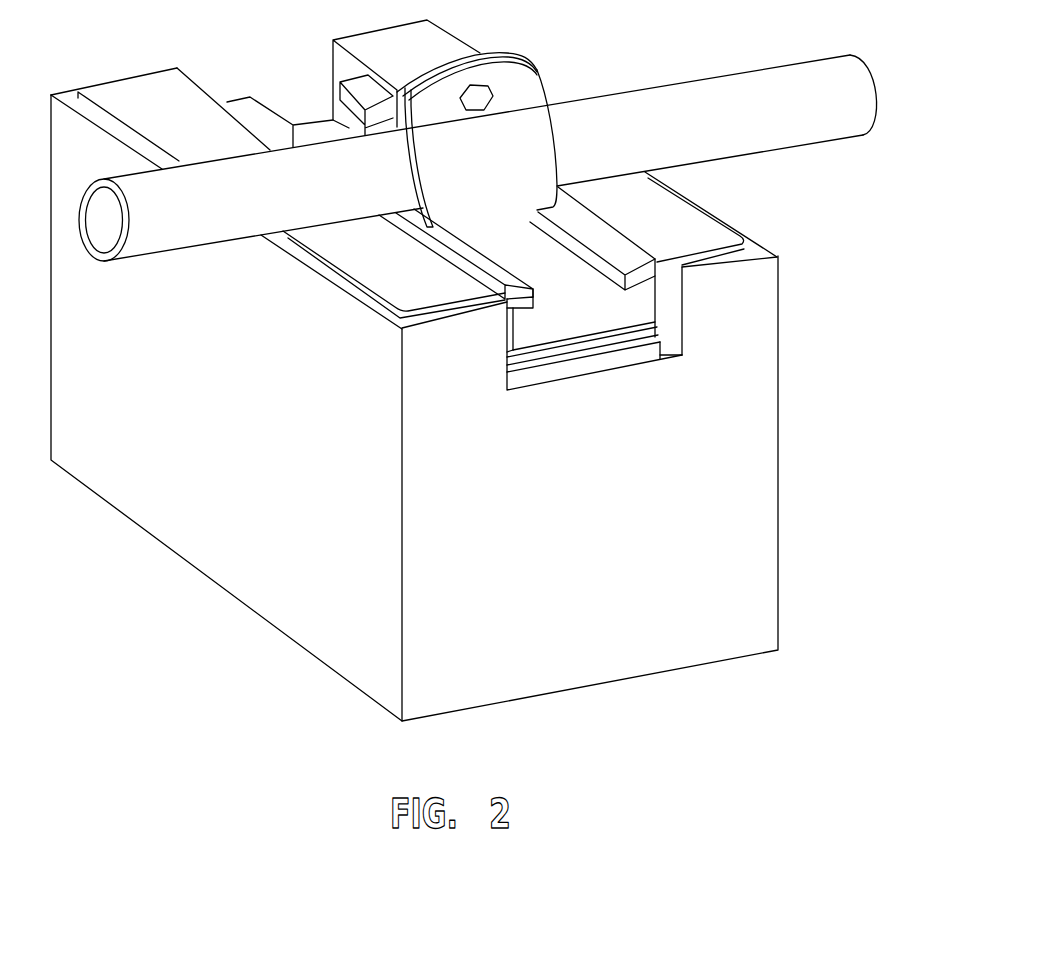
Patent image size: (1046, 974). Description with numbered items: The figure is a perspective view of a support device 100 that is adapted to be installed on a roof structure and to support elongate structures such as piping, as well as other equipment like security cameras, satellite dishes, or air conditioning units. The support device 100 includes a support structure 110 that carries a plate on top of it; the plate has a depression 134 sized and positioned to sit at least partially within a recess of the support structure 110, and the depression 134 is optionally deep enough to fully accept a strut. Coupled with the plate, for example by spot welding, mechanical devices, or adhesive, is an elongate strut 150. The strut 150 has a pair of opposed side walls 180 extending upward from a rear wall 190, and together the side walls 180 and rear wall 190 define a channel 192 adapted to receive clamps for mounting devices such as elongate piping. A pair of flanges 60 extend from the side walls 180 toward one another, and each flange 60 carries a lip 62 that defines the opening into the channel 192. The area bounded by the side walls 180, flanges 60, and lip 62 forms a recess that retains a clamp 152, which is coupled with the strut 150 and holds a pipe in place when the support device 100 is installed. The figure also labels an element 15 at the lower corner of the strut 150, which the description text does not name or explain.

The support device 100 is at (464, 370).
The support structure 110 is at (779, 448).
The depression 134 is at (318, 128).
The clamp 152 is at (533, 88).
The flanges 60 is at (463, 262).
The lip 62 is at (540, 227).
The elongate strut 150 is at (522, 355).
The side walls 180 is at (514, 330).
The rear wall 190 is at (557, 340).
The channel 192 is at (570, 326).
The channel bottom 15 is at (665, 355).